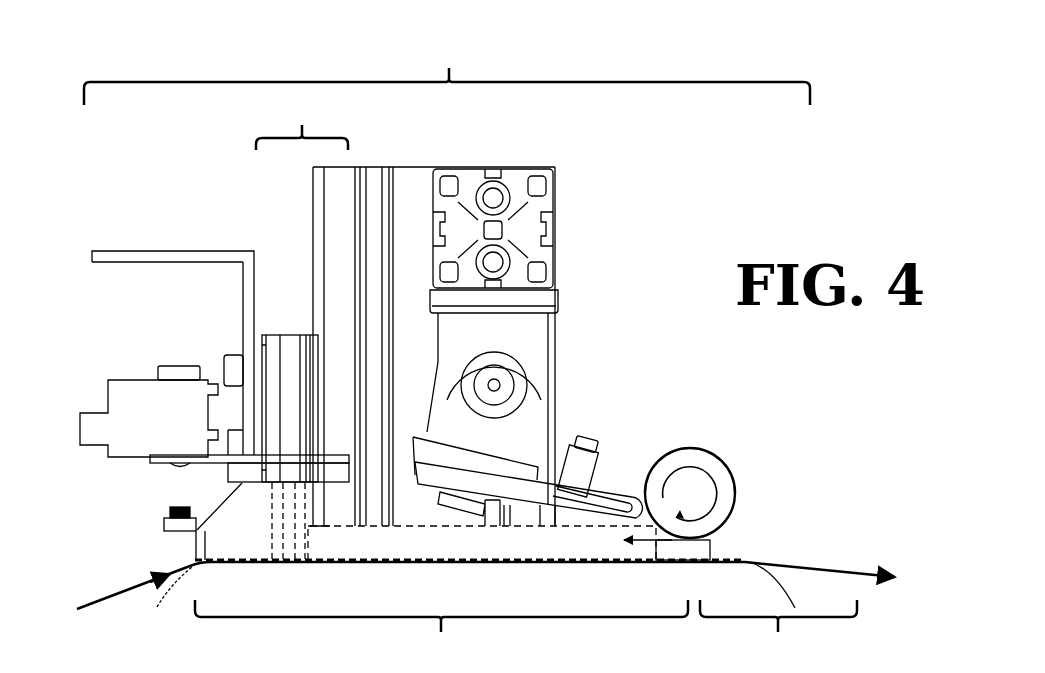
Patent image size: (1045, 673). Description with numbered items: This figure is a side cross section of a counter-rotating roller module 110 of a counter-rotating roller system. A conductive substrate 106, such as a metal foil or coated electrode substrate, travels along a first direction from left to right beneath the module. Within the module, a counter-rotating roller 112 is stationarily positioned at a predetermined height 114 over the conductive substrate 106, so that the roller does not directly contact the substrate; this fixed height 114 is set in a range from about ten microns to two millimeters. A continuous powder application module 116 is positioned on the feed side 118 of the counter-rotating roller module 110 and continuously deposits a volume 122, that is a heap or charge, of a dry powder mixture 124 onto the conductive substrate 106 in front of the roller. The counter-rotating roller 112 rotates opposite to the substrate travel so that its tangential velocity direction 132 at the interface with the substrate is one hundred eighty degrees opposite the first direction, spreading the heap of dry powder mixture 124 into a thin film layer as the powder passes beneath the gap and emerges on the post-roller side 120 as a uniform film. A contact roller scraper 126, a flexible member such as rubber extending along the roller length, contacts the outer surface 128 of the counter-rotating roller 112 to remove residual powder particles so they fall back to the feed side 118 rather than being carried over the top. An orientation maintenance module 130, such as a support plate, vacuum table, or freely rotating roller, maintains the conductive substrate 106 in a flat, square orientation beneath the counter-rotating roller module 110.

The conductive substrate 106 is at (123, 590).
The counter-rotating roller module 110 is at (447, 67).
The counter-rotating roller 112 is at (712, 463).
The height 114 is at (712, 549).
The continuous powder application module 116 is at (405, 312).
The feed side 118 is at (441, 632).
The post-roller side 120 is at (778, 632).
The volume 122 is at (514, 554).
The dry powder mixture 124 is at (272, 545).
The contact roller scraper 126 is at (640, 500).
The outer surface 128 is at (736, 502).
The orientation maintenance module 130 is at (157, 606).
The tangential velocity direction 132 is at (622, 552).